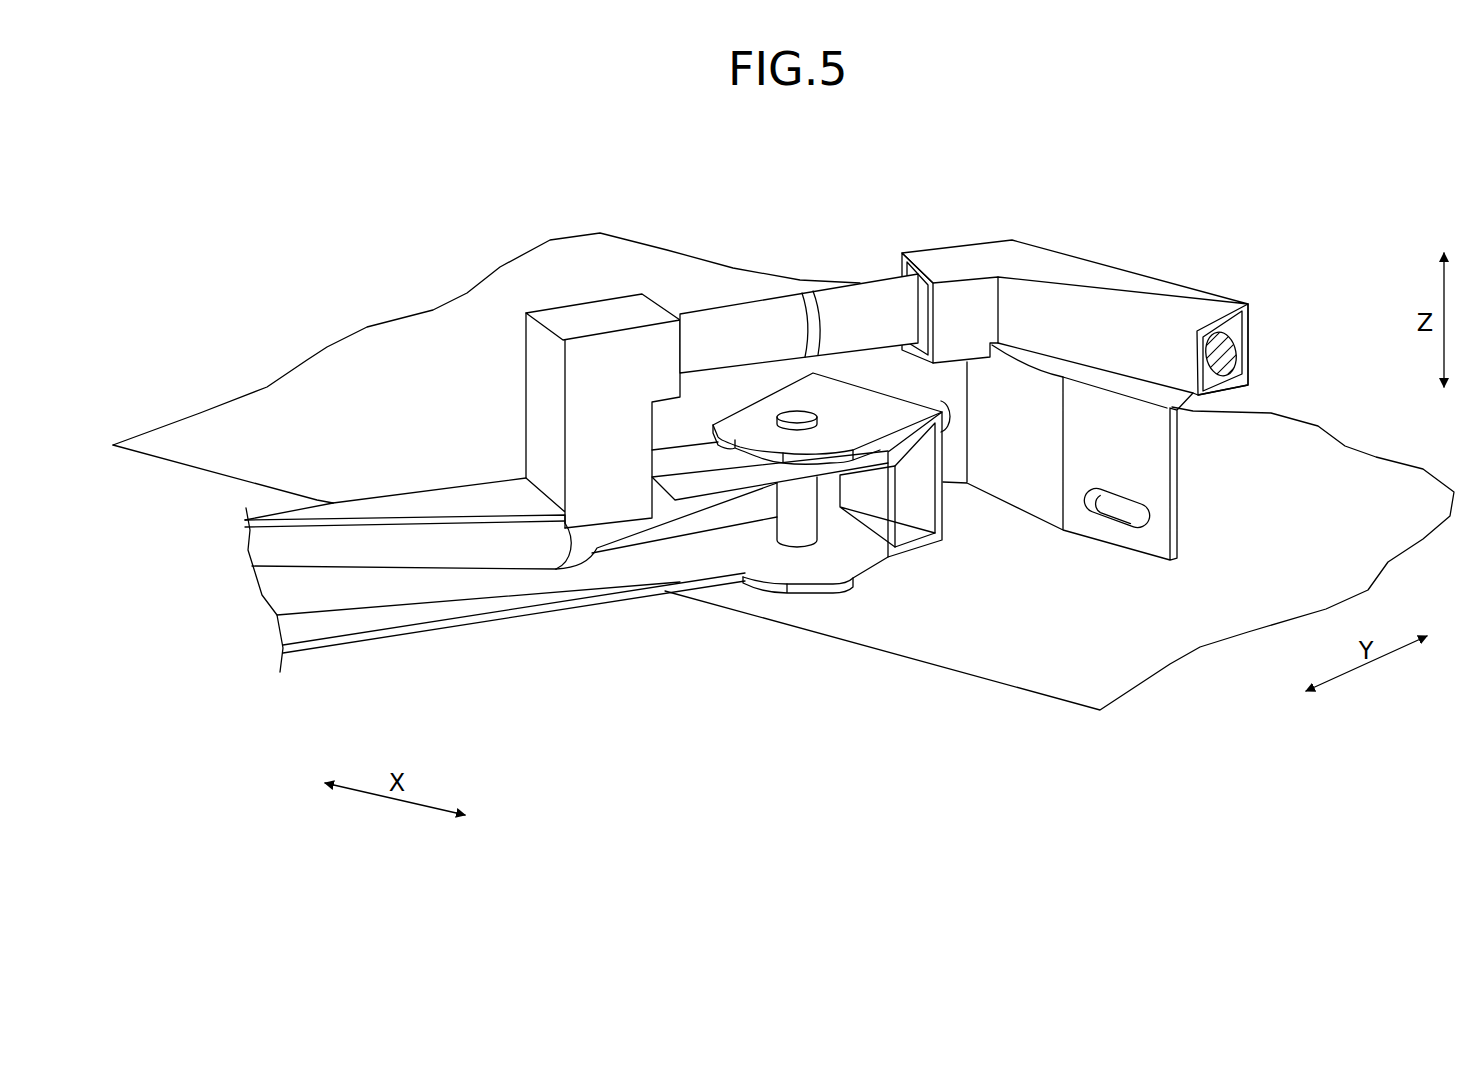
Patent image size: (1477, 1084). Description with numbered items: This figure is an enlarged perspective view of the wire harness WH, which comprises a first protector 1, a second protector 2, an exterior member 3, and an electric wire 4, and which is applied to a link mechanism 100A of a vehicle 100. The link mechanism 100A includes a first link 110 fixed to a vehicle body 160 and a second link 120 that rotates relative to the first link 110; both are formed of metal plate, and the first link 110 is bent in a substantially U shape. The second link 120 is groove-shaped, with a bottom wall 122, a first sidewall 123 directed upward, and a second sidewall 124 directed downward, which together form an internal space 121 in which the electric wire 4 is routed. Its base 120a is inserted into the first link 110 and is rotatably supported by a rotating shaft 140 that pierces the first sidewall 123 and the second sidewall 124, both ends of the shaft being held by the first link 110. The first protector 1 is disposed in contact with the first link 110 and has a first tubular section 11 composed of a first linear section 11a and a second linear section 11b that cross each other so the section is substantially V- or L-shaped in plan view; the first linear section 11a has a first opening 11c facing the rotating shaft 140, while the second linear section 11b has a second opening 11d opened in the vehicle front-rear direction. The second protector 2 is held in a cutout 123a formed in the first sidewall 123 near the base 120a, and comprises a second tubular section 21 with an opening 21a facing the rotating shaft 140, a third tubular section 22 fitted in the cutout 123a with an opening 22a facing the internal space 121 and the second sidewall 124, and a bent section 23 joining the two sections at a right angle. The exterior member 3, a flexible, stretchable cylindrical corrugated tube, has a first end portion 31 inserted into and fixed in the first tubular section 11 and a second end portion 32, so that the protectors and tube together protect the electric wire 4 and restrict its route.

The first protector 1 is at (1008, 263).
The second protector 2 is at (581, 432).
The exterior member 3 is at (821, 296).
The electric wire 4 is at (371, 588).
The first tubular section 11 is at (1008, 263).
The first linear section 11a is at (949, 265).
The second linear section 11b is at (1143, 293).
The first opening 11c is at (902, 270).
The second opening 11d is at (1244, 337).
The second tubular section 21 is at (632, 307).
The opening 21a is at (659, 303).
The third tubular section 22 is at (540, 415).
The opening 22a is at (608, 528).
The bent section 23 is at (540, 339).
The first end portion 31 is at (923, 291).
The second end portion 32 is at (680, 313).
The vehicle 100 is at (783, 463).
The link mechanism 100A is at (814, 612).
The first link 110 is at (873, 590).
The second link 120 is at (548, 473).
The base 120a is at (764, 554).
The internal space 121 is at (476, 597).
The bottom wall 122 is at (712, 508).
The first sidewall 123 is at (270, 539).
The cutout 123a is at (665, 496).
The second sidewall 124 is at (328, 628).
The rotating shaft 140 is at (796, 412).
The vehicle body 160 is at (1353, 465).
The wire harness WH is at (799, 252).